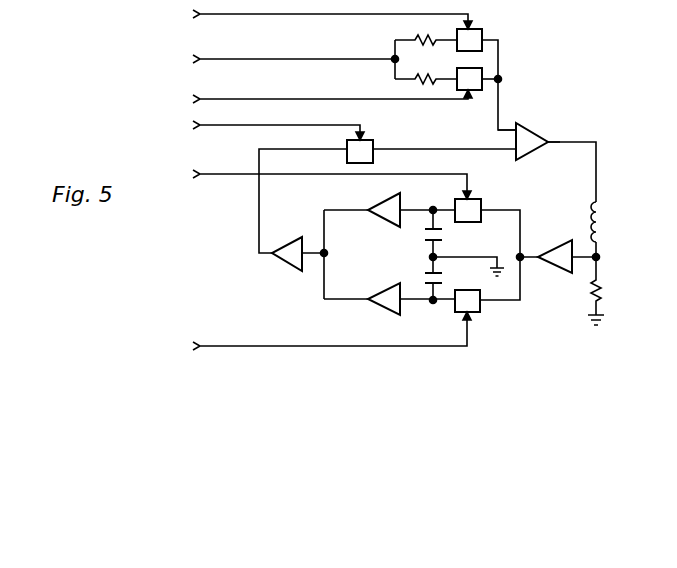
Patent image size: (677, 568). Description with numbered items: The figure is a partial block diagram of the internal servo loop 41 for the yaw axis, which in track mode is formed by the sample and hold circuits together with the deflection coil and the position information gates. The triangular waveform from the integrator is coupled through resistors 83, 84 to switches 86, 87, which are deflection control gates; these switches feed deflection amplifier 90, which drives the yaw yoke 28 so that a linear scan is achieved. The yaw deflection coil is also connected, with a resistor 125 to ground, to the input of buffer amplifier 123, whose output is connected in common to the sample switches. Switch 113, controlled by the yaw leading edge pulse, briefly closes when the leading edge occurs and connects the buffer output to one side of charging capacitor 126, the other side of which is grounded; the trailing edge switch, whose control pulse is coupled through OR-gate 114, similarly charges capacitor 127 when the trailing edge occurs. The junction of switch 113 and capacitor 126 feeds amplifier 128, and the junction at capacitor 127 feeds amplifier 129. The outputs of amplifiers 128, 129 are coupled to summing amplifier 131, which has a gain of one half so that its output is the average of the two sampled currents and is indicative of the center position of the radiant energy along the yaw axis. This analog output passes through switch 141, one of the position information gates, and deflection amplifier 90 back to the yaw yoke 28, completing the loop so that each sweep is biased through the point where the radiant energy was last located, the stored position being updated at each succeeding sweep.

The resistor 83 is at (414, 36).
The resistor 84 is at (440, 72).
The switch 86 is at (484, 27).
The switch 87 is at (476, 92).
The internal servo loop 41 is at (553, 113).
The deflection amplifier 90 is at (521, 161).
The yaw yoke deflection coil 28 is at (601, 214).
The resistor 125 is at (604, 292).
The buffer amplifier 123 is at (548, 244).
The switch 113 is at (493, 191).
The OR-gate 114 is at (482, 305).
The switch 141 is at (375, 148).
The summing amplifier 131 is at (282, 240).
The amplifier 128 is at (379, 222).
The amplifier 129 is at (366, 293).
The charging capacitor 126 is at (428, 240).
The charging capacitor 127 is at (425, 280).